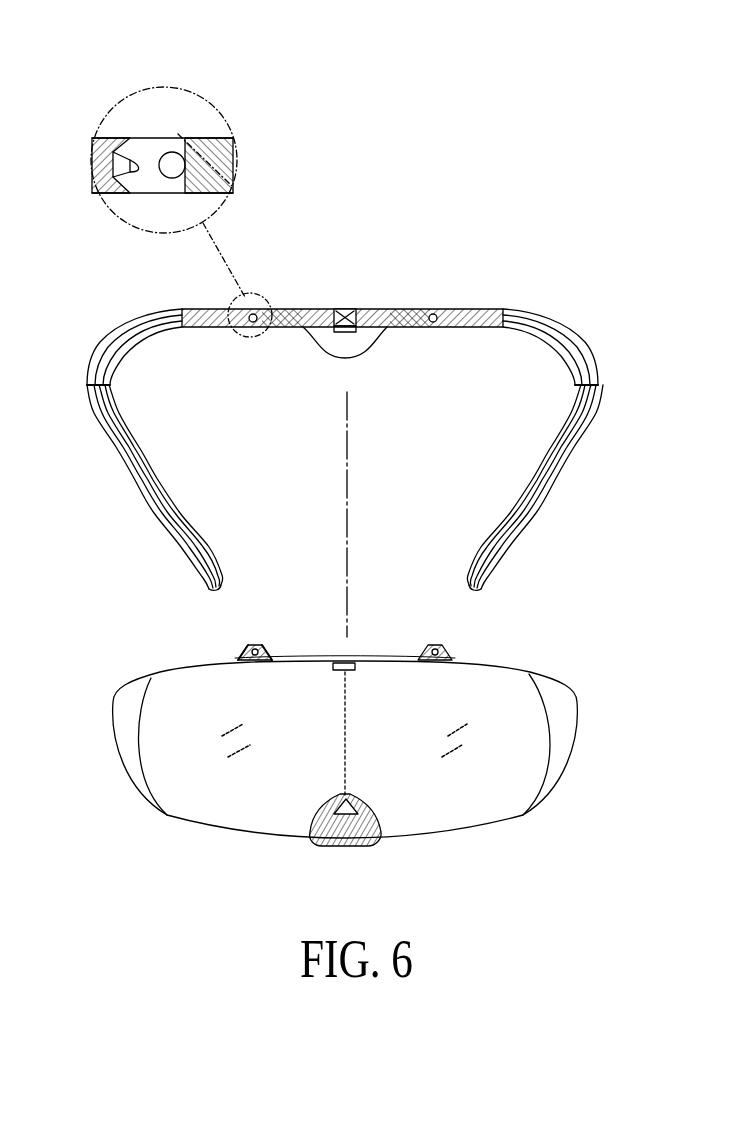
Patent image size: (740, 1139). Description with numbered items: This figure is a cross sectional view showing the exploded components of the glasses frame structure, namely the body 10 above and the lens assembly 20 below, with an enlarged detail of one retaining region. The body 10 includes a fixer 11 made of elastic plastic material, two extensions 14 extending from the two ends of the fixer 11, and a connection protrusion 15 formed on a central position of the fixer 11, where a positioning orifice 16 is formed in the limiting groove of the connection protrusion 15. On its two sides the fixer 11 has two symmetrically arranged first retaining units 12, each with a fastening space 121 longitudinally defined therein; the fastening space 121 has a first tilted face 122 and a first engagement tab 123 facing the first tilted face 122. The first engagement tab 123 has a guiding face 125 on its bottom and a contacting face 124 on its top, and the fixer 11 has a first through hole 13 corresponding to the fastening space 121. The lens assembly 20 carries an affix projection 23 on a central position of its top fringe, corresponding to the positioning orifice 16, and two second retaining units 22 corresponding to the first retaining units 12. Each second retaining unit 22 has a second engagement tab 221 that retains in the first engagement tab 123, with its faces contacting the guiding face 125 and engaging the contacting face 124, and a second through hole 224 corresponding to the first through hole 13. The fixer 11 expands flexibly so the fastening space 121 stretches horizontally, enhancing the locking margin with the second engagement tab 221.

The body 10 is at (549, 264).
The fixer 11 is at (398, 307).
The first retaining unit 12 is at (249, 302).
The fastening space 121 is at (157, 137).
The first tilted face 122 is at (225, 188).
The first engagement tab 123 is at (110, 203).
The contacting face 124 is at (115, 143).
The guiding face 125 is at (137, 190).
The first through hole 13 is at (174, 178).
The extension 14 is at (138, 497).
The connection protrusion 15 is at (352, 352).
The positioning orifice 16 is at (340, 307).
The lens assembly 20 is at (505, 716).
The second retaining unit 22 is at (243, 641).
The second engagement tab 221 is at (238, 650).
The second through hole 224 is at (262, 645).
The affix projection 23 is at (350, 664).